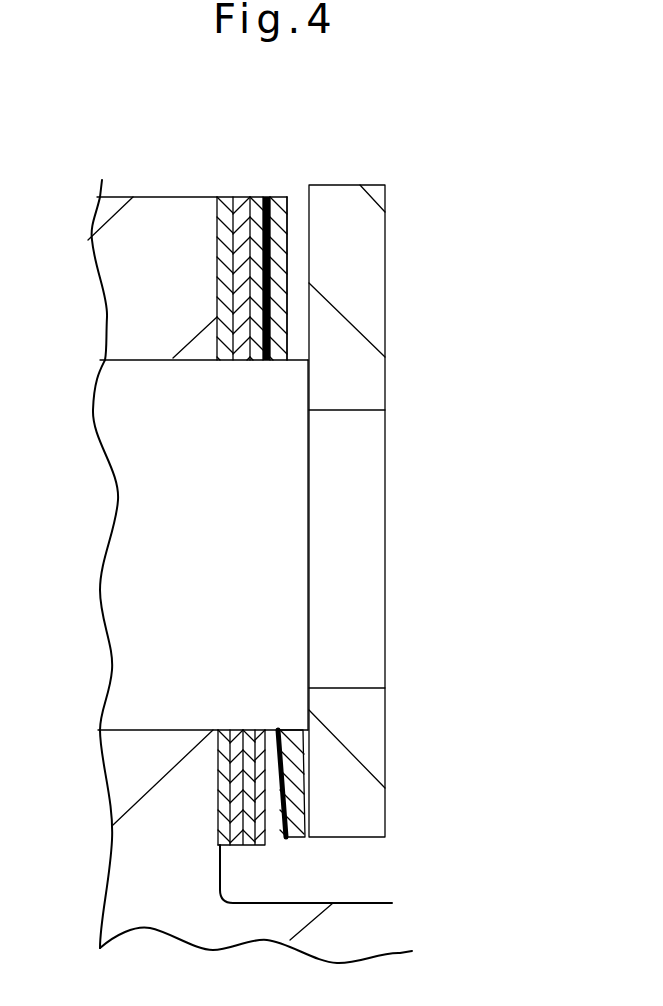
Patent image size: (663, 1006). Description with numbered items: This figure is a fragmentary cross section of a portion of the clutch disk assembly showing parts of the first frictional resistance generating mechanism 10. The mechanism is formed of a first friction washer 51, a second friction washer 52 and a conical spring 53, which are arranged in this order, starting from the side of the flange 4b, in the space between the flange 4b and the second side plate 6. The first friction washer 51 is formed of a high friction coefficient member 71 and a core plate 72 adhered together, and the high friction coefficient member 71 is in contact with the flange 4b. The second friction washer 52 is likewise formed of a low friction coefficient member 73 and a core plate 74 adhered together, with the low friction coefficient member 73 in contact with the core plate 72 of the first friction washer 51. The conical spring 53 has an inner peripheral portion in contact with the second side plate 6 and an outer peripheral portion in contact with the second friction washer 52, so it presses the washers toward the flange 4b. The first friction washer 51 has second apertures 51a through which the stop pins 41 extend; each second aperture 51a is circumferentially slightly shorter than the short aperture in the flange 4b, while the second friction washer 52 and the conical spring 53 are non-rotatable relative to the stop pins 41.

The flange 4b is at (167, 247).
The stop pins 41 is at (253, 540).
The first friction washer 51 is at (222, 465).
The high friction coefficient member 71 is at (222, 197).
The core plate 72 is at (241, 197).
The second friction washer 52 is at (323, 449).
The low friction coefficient member 73 is at (253, 197).
The core plate 74 is at (265, 197).
The conical spring 53 is at (283, 228).
The second side plate 6 is at (345, 275).
The second apertures 51a is at (223, 362).
The first frictional resistance generating mechanism 10 is at (293, 868).